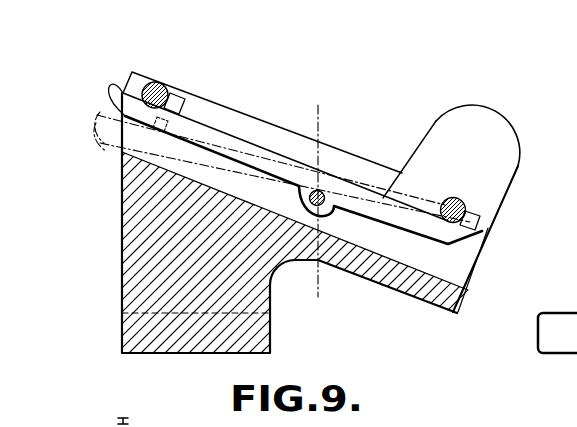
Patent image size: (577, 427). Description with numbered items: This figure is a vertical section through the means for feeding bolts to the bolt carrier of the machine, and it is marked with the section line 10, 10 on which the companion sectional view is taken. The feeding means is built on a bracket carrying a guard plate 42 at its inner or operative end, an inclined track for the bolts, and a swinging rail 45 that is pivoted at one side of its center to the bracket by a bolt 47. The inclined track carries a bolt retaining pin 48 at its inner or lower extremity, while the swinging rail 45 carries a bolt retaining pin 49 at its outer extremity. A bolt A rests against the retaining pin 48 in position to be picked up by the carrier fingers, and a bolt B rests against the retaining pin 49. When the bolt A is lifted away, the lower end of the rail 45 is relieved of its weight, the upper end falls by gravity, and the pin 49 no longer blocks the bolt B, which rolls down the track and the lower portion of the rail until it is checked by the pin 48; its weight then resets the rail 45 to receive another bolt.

The guard plate 42 is at (519, 163).
The swinging rail 45 is at (350, 190).
The bolt 47 is at (318, 190).
The bolt retaining pin 48 is at (477, 223).
The bolt retaining pin 49 is at (178, 99).
The bolt A is at (467, 208).
The bolt B is at (158, 90).
The section line 10— 10 is at (318, 105).